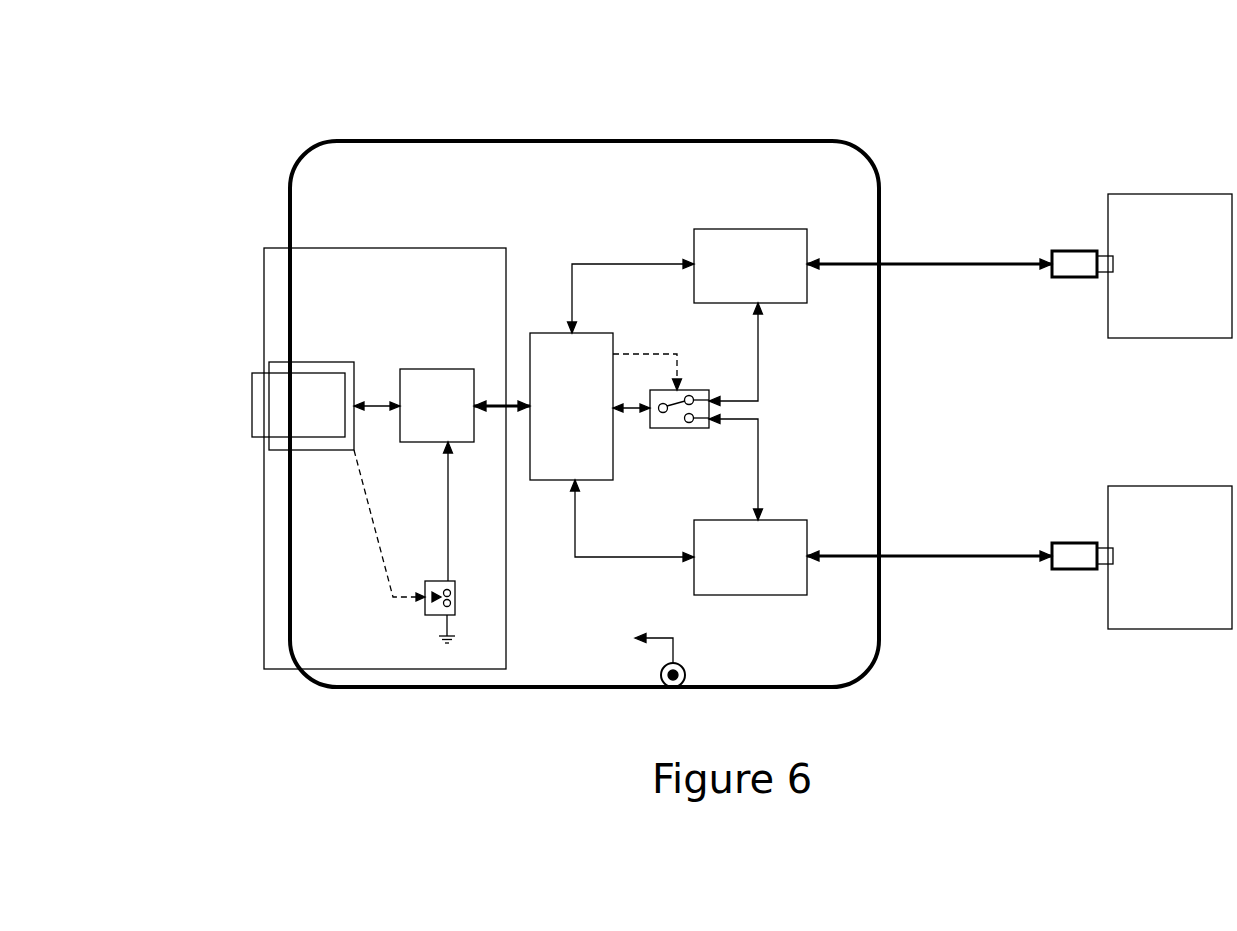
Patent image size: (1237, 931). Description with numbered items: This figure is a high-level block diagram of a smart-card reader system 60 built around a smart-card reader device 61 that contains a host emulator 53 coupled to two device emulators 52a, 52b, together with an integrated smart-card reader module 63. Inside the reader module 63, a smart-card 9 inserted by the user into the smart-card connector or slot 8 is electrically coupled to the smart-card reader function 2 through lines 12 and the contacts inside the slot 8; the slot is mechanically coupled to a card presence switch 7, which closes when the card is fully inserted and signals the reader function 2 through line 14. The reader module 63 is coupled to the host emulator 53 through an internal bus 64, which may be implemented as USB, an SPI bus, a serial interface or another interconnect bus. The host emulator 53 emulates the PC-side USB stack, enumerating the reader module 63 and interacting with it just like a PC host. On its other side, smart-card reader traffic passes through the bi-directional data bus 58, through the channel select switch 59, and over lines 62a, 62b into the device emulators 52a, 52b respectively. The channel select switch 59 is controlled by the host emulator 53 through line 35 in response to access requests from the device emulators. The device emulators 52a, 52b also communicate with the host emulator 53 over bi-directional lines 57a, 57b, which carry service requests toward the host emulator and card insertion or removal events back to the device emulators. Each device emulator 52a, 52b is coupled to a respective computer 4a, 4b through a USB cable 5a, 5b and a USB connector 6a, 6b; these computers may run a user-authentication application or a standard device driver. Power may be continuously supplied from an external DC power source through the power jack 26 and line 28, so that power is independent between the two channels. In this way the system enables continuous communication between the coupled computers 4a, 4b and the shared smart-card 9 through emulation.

The smart-card reader system 60 is at (206, 61).
The smart-card reader device 61 is at (879, 407).
The smart-card reader module 63 is at (447, 248).
The smart-card 9 is at (252, 400).
The smart-card connector or slot 8 is at (309, 362).
The smart-card reader function 2 is at (437, 369).
The lines 12 is at (378, 400).
The internal bus 64 is at (490, 400).
The host emulator 53 is at (545, 333).
The bi-directional line 57a is at (645, 264).
The bi-directional line 57b is at (635, 557).
The device emulator 52a is at (749, 229).
The device emulator 52b is at (745, 595).
The line 62a is at (758, 363).
The line 62b is at (758, 445).
The channel select switch 59 is at (678, 428).
The bi-directional data bus 58 is at (630, 408).
The line 35 is at (680, 365).
The line 14 is at (448, 523).
The card presence switch 7 is at (457, 597).
The power output 28 is at (655, 638).
The power jack 26 is at (673, 689).
The USB cable 5a is at (965, 264).
The USB cable 5b is at (965, 556).
The USB connector 6a is at (1078, 251).
The USB connector 6b is at (1078, 543).
The computer 4a is at (1160, 194).
The computer 4b is at (1160, 486).